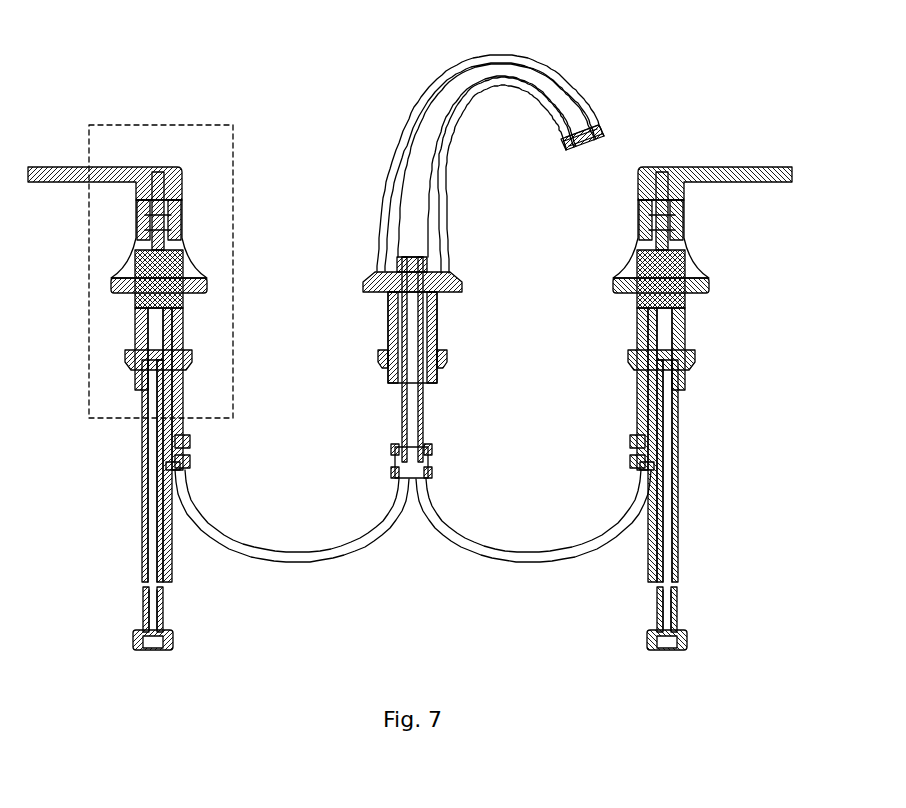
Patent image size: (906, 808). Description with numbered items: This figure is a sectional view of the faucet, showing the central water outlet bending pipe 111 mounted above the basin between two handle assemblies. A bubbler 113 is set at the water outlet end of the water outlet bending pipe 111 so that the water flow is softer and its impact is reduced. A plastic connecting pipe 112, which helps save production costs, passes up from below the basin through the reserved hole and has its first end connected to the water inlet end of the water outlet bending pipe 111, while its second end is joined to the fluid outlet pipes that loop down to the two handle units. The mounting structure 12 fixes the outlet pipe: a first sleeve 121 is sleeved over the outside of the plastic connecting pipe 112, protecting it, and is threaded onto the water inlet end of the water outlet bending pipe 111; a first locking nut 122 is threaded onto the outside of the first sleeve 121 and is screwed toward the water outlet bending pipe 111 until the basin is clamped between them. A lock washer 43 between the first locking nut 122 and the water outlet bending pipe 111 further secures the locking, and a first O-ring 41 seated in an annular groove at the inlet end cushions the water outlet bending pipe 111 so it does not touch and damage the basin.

The water outlet bending pipe 111 is at (450, 70).
The bubbler 113 is at (574, 118).
The plastic connecting pipe 112 is at (422, 304).
The first sleeve 121 is at (437, 320).
The first locking nut 122 is at (441, 364).
The mounting structure 12 is at (478, 346).
The first O-ring 41 is at (378, 291).
The lock washer 43 is at (379, 355).